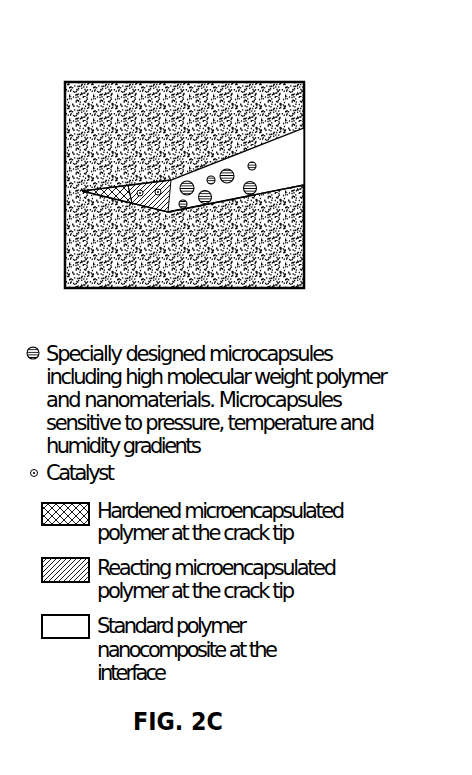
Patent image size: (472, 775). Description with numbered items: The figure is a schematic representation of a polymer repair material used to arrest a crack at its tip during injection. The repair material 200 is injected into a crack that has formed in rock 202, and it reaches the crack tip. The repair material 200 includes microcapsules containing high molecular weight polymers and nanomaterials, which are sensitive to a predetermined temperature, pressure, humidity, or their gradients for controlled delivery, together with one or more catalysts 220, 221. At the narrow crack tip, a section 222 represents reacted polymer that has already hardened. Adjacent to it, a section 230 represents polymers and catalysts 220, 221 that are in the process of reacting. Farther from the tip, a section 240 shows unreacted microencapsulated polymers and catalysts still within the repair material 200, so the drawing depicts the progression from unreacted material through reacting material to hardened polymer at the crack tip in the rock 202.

The repair material 200 is at (293, 162).
The rock 202 is at (213, 97).
The catalyst 220 is at (140, 190).
The catalyst 221 is at (158, 189).
The section of reacted hardened polymer 222 is at (110, 184).
The section of reacting polymers and catalysts 230 is at (155, 210).
The section of unreacted microencapsulated polymers and catalysts 240 is at (233, 197).